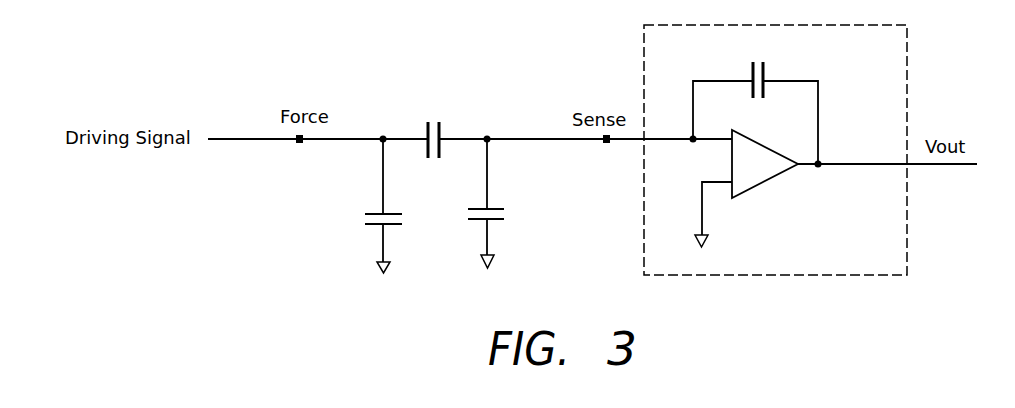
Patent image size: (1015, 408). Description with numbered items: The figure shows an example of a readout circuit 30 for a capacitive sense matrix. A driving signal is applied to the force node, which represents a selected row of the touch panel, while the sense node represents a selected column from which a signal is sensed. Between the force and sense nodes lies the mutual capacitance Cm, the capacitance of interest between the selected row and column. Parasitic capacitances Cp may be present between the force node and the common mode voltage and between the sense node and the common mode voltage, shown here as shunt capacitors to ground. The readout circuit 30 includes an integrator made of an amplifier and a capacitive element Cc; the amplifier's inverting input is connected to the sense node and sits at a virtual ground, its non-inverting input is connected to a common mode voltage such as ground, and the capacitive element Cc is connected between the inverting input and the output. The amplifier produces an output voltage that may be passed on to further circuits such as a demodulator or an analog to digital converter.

The readout circuit 30 is at (826, 150).
The mutual capacitance Cm is at (435, 125).
The parasitic capacitances Cp is at (417, 206).
The capacitive element Cc is at (755, 100).